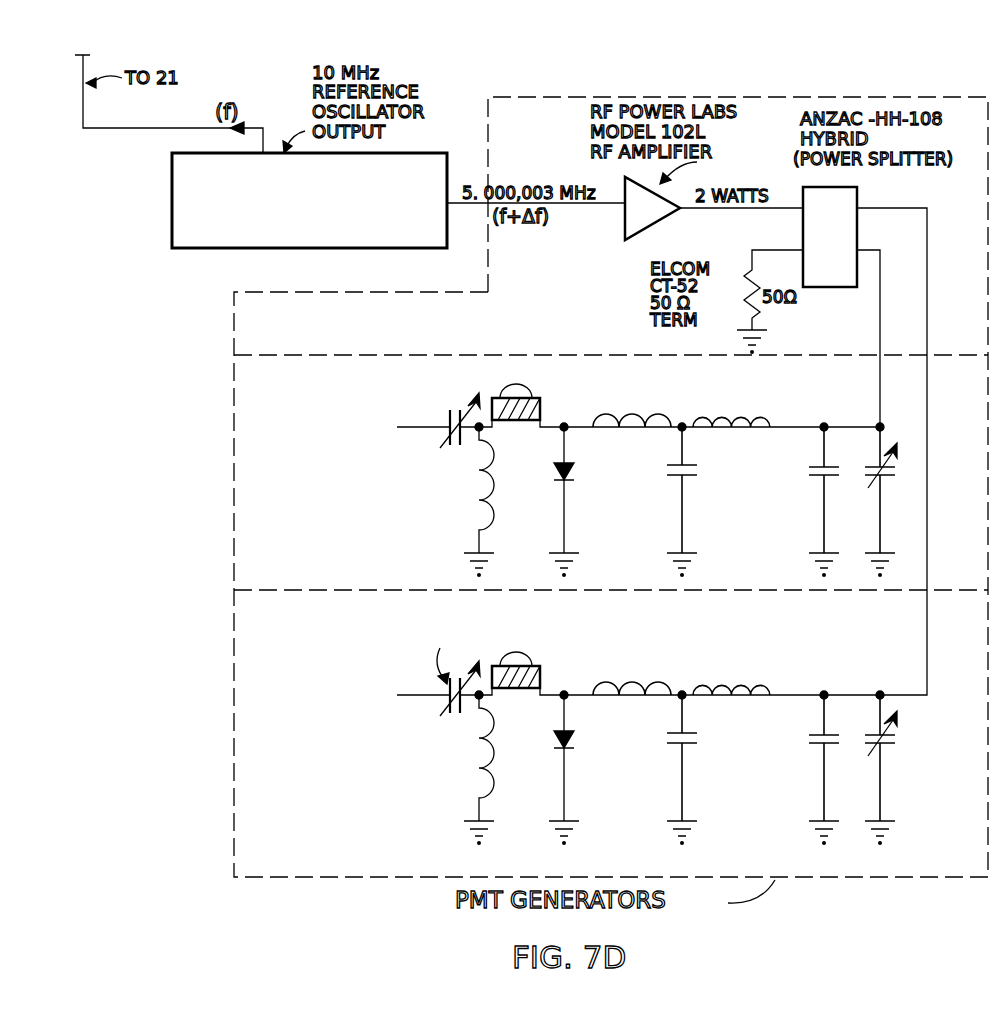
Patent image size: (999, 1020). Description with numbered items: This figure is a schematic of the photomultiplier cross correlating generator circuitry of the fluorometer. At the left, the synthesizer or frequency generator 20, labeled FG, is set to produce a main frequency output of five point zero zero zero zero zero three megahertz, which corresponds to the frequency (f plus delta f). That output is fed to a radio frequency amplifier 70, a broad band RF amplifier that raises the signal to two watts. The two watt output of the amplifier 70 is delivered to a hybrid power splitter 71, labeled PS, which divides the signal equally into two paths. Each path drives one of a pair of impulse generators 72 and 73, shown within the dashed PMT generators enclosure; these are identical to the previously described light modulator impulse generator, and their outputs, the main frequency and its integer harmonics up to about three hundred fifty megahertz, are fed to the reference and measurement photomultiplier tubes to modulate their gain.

The frequency generator 20 is at (171, 222).
The radio frequency amplifier 70 is at (644, 231).
The power splitter 71 is at (858, 197).
The impulse generator 72 is at (233, 470).
The impulse generator 73 is at (233, 773).